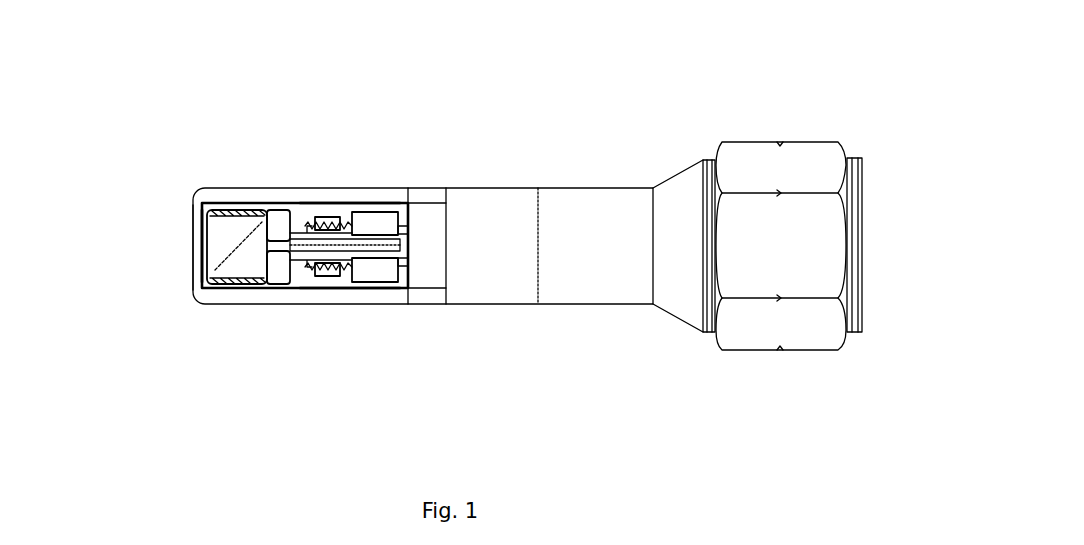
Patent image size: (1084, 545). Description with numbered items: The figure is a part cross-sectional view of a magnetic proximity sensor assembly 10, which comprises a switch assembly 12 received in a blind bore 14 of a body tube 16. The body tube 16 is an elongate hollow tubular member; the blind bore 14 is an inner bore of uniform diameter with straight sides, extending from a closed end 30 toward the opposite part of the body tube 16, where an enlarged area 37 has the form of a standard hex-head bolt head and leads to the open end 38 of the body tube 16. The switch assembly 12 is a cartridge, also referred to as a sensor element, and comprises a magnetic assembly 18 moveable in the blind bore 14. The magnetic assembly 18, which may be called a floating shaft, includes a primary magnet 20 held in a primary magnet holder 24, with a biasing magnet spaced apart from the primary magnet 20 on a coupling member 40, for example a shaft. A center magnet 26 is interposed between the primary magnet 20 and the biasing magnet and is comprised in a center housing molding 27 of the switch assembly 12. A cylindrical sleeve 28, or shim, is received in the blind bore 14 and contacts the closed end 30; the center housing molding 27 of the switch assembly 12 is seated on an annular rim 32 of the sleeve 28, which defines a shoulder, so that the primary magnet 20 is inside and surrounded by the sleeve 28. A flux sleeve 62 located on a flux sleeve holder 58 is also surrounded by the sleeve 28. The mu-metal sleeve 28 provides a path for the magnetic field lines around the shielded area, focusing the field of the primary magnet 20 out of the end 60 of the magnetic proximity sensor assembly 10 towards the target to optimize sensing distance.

The magnetic proximity sensor assembly 10 is at (583, 139).
The switch assembly 12 is at (316, 280).
The blind bore 14 is at (349, 203).
The body tube 16 is at (361, 186).
The magnetic assembly 18 is at (252, 261).
The primary magnet 20 is at (229, 240).
The primary magnet holder 24 is at (273, 208).
The center magnet 26 is at (399, 210).
The center housing molding 27 is at (358, 290).
The sleeve 28 is at (208, 199).
The closed end 30 is at (222, 280).
The rim 32 is at (345, 294).
The enlarged area 37 is at (750, 158).
The open end 38 is at (864, 226).
The coupling member 40 is at (388, 293).
The flux sleeve holder 58 is at (311, 207).
The end 60 is at (192, 243).
The flux sleeve 62 is at (331, 217).